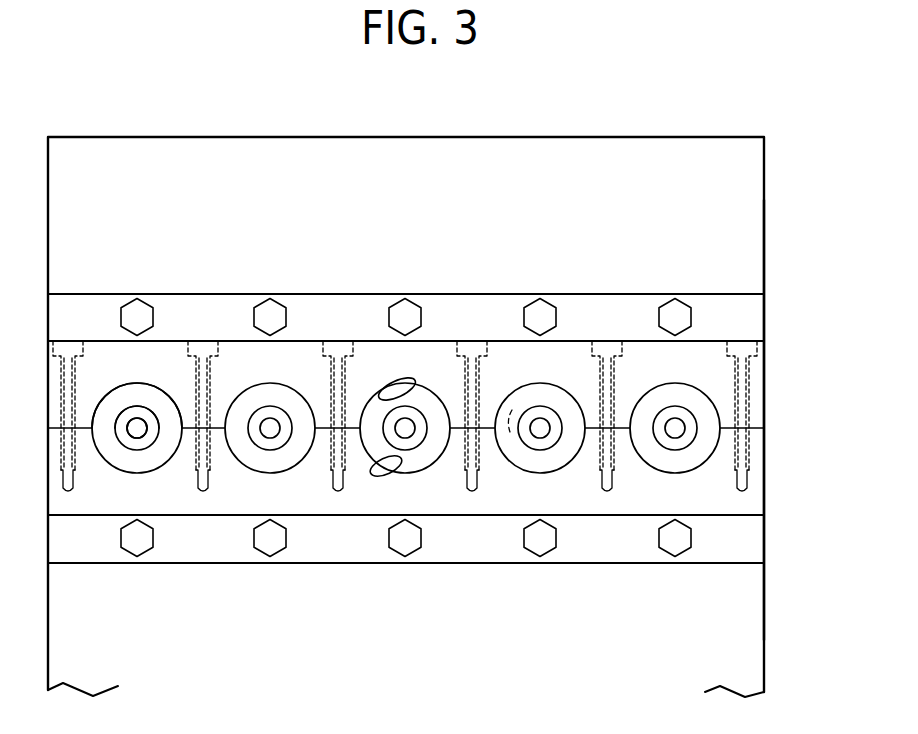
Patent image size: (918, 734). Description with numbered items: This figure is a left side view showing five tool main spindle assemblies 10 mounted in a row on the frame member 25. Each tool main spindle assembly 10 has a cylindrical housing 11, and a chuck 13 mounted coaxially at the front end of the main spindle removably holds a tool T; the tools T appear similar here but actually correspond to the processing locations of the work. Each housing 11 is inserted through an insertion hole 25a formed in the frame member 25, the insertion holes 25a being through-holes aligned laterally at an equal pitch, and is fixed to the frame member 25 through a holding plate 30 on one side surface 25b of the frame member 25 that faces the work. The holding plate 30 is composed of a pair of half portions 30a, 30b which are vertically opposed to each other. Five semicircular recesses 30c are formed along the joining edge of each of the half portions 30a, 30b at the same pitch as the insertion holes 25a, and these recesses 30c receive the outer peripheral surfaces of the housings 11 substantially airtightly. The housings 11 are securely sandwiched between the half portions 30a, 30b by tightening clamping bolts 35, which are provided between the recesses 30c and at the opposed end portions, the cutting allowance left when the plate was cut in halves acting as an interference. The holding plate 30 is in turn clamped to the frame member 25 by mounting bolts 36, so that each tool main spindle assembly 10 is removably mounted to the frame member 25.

The tool main spindle assembly 10 is at (110, 468).
The housing 11 is at (178, 455).
The chuck 13 is at (128, 418).
The tool T is at (138, 428).
The frame member 25 is at (752, 186).
The insertion hole 25a is at (512, 410).
The one side surface 25b is at (742, 245).
The holding plate 30 is at (210, 286).
The half portion 30a is at (300, 352).
The half portion 30b is at (233, 495).
The semicircular recess 30c is at (400, 389).
The clamping bolt 35 is at (756, 378).
The mounting bolt 36 is at (542, 312).